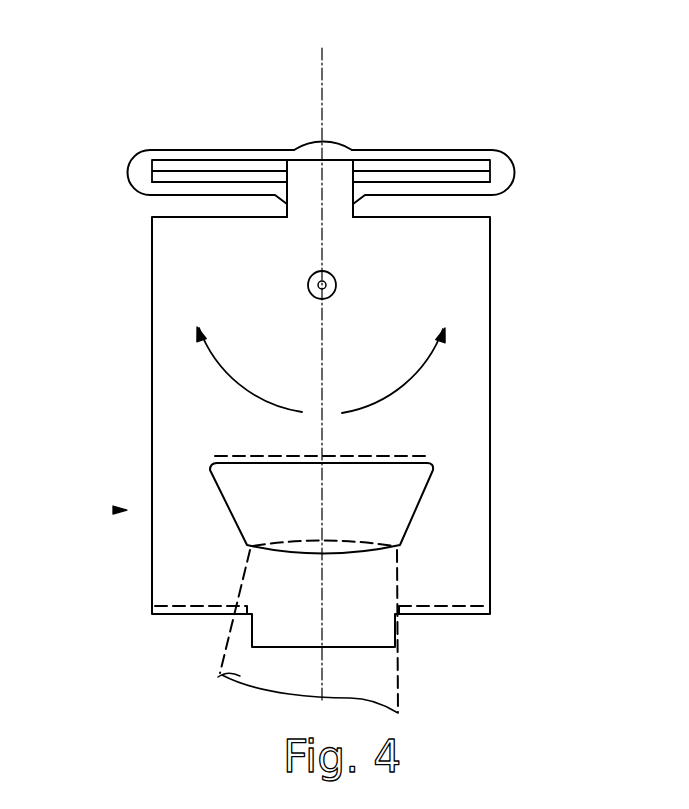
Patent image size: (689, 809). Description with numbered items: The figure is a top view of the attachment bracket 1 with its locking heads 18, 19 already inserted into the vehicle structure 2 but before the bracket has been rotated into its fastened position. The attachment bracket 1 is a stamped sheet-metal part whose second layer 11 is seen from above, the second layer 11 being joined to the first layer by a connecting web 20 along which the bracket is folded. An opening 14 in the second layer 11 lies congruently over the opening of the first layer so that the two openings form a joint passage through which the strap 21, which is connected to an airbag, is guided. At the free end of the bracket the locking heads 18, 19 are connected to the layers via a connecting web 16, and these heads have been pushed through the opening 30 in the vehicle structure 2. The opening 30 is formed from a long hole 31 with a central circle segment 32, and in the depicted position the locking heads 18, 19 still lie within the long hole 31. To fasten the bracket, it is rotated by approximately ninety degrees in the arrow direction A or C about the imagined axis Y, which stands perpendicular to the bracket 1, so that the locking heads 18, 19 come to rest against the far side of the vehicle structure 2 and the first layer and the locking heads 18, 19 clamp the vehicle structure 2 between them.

The attachment bracket 1 is at (125, 510).
The vehicle structure 2 is at (83, 307).
The second layer 11 is at (472, 297).
The opening 14 is at (403, 517).
The connecting web 16 is at (324, 175).
The locking head 18 is at (490, 161).
The locking head 19 is at (490, 176).
The connecting web 20 is at (370, 635).
The strap 21 is at (222, 675).
The opening 30 is at (240, 149).
The long hole 31 is at (134, 175).
The central circle segment 32 is at (329, 143).
The imagined axis Y is at (307, 285).
The arrow direction A is at (208, 355).
The arrow direction C is at (438, 353).